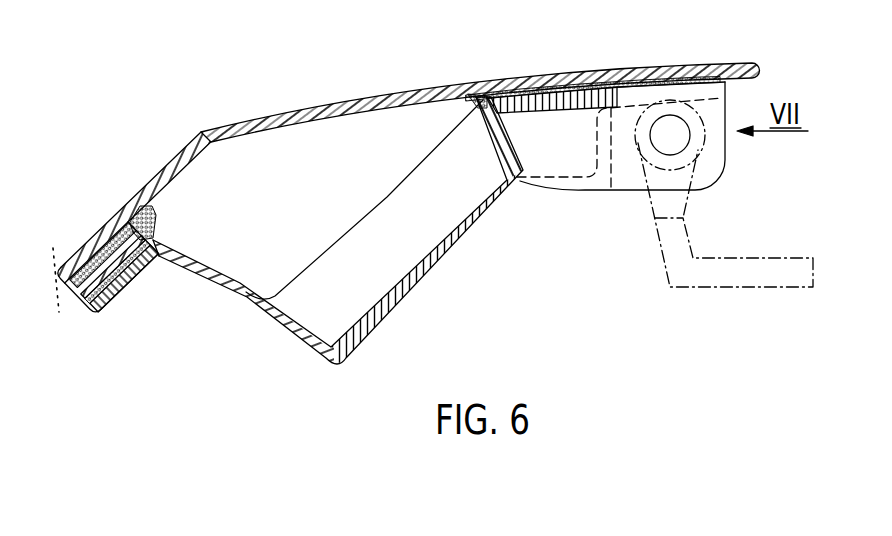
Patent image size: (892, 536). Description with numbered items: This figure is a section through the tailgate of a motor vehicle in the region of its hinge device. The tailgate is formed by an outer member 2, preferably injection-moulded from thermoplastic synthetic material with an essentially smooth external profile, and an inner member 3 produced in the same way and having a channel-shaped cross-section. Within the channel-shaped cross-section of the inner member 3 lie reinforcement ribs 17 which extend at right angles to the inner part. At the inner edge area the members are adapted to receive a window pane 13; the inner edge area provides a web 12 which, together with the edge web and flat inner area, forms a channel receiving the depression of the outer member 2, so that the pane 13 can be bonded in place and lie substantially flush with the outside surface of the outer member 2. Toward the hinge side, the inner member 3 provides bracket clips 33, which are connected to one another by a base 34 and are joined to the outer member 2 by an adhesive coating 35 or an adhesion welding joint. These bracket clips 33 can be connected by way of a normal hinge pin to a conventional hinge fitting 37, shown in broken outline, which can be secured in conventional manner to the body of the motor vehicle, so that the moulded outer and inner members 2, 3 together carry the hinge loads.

The outer member 2 is at (373, 96).
The inner member 3 is at (448, 250).
The web 12 is at (147, 222).
The window pane 13 is at (92, 235).
The reinforcement ribs 17 is at (445, 215).
The bracket clips 33 is at (621, 180).
The base 34 is at (706, 92).
The adhesive coating 35 is at (658, 84).
The hinge fitting 37 is at (714, 280).